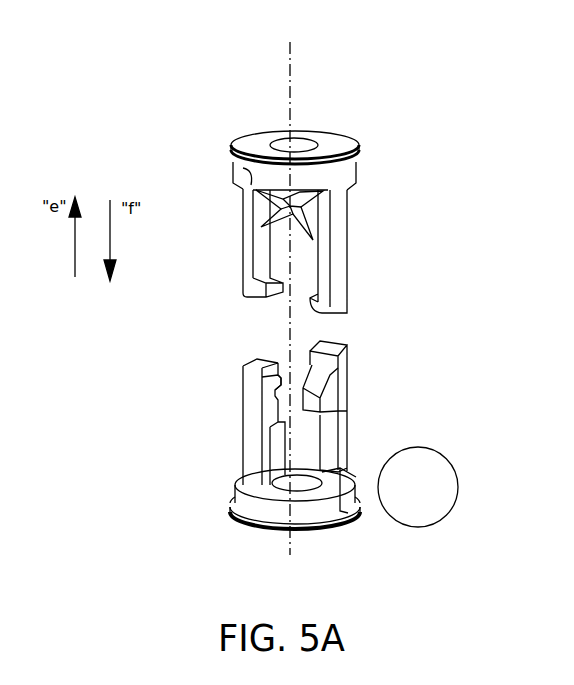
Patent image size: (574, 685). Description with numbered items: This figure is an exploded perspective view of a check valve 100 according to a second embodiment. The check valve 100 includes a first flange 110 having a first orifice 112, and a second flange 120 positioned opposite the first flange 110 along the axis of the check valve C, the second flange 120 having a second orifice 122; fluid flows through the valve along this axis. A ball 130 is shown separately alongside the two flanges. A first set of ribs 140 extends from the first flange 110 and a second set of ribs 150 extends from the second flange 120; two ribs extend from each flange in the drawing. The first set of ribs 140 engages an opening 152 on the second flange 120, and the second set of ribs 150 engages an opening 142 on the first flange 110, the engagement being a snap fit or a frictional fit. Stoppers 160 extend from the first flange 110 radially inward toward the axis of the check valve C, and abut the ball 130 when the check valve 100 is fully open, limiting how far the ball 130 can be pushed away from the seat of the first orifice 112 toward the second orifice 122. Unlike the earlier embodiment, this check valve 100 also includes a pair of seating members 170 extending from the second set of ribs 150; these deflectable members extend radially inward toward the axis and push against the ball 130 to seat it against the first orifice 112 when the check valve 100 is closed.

The check valve 100 is at (454, 94).
The first flange 110 is at (254, 528).
The first orifice 112 is at (272, 487).
The second flange 120 is at (246, 141).
The second orifice 122 is at (302, 142).
The ball 130 is at (457, 473).
The first set of ribs 140 is at (252, 450).
The opening 142 is at (334, 528).
The second set of ribs 150 is at (338, 223).
The opening 152 is at (248, 172).
The stoppers 160 is at (277, 402).
The seating members 170 is at (260, 226).
The axis of the check valve C is at (296, 62).